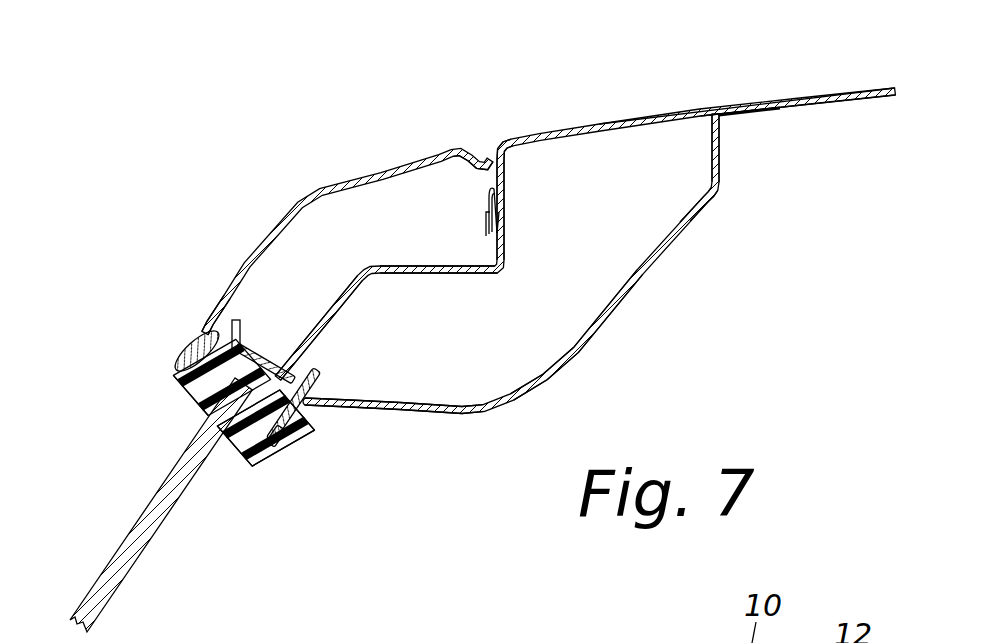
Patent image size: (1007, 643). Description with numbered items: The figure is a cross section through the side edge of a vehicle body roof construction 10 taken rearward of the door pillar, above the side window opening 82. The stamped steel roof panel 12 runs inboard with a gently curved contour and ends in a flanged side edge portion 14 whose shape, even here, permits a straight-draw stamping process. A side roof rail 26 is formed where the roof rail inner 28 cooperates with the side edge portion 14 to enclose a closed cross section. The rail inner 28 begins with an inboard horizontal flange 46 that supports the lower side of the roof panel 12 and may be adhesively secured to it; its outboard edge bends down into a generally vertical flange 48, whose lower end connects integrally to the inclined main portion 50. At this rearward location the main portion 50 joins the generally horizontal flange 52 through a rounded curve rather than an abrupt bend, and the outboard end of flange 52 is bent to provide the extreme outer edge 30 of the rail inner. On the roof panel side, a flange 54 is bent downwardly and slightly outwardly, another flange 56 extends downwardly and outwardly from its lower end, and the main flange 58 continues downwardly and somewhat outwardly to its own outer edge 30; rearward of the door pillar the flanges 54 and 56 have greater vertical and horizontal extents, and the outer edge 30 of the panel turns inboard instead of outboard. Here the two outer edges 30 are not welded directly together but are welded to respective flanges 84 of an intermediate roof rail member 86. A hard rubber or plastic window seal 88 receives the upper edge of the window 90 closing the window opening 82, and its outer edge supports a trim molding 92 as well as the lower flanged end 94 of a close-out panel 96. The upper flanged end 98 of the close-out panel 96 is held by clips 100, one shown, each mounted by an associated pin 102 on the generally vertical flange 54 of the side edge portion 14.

The vehicle body roof construction 10 is at (722, 99).
The roof panel 12 is at (836, 91).
The flanged side edge portion 14 is at (506, 146).
The side roof rail 26 is at (658, 302).
The roof rail inner 28 is at (590, 353).
The extreme outer edge 30 is at (218, 390).
The inboard horizontal flange 46 is at (757, 118).
The generally vertical flange 48 is at (710, 150).
The inclined main portion 50 is at (690, 247).
The generally horizontal flange 52 is at (441, 412).
The flange 54 is at (504, 240).
The flange 56 is at (450, 274).
The main flange 58 is at (340, 300).
The side window opening 82 is at (253, 459).
The flanges 84 is at (272, 358).
The intermediate roof rail member 86 is at (320, 371).
The window seal 88 is at (190, 403).
The window 90 is at (140, 549).
The trim molding 92 is at (180, 349).
The lower flanged end 94 is at (226, 330).
The close-out panel 96 is at (350, 186).
The upper flanged end 98 is at (487, 162).
The clips 100 is at (487, 198).
The pins 102 is at (487, 231).